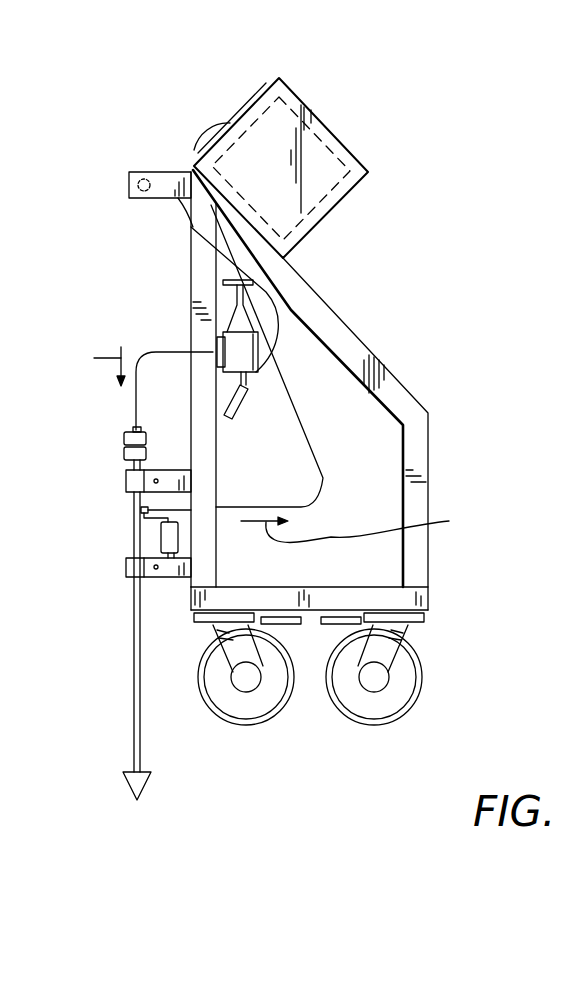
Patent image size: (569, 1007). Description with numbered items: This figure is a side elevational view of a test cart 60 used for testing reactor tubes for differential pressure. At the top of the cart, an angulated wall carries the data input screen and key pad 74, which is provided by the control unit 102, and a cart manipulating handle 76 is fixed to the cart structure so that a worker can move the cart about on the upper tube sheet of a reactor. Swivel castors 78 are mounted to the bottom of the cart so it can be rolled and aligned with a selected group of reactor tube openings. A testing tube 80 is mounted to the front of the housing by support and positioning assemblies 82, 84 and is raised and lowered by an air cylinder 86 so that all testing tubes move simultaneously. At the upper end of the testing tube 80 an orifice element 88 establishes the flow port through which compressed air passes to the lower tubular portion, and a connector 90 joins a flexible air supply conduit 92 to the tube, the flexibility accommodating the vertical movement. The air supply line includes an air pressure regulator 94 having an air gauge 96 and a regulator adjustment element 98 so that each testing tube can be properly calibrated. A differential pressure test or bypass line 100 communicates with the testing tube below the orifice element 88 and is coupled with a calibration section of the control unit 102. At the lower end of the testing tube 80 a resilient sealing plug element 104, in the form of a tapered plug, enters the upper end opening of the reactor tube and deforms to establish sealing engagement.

The test cart 60 is at (352, 86).
The data input screen and key pad 74 is at (243, 107).
The cart manipulating handles 76 is at (140, 170).
The swivel castors 78 is at (337, 710).
The testing tubes 80 is at (130, 700).
The support and positioning assembly 82 is at (160, 491).
The support and positioning assembly 84 is at (152, 578).
The air cylinder 86 is at (158, 537).
The orifice element 88 is at (122, 452).
The connector 90 is at (122, 437).
The air supply conduit 92 is at (170, 352).
The air pressure regulator 94 is at (258, 368).
The air gauge 96 is at (247, 407).
The regulator adjustment element 98 is at (222, 280).
The differential pressure test or bypass line 100 is at (326, 461).
The control unit 102 is at (327, 157).
The resilient sealing plug element 104 is at (145, 792).